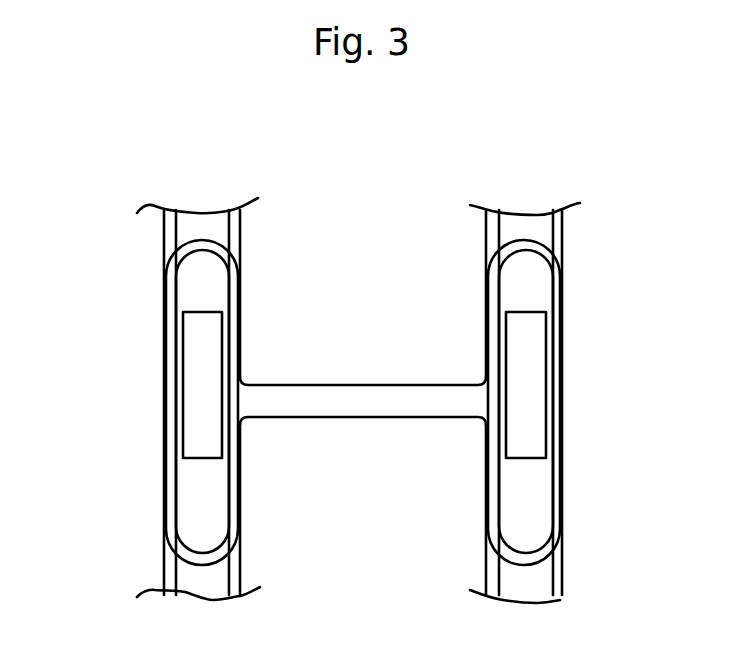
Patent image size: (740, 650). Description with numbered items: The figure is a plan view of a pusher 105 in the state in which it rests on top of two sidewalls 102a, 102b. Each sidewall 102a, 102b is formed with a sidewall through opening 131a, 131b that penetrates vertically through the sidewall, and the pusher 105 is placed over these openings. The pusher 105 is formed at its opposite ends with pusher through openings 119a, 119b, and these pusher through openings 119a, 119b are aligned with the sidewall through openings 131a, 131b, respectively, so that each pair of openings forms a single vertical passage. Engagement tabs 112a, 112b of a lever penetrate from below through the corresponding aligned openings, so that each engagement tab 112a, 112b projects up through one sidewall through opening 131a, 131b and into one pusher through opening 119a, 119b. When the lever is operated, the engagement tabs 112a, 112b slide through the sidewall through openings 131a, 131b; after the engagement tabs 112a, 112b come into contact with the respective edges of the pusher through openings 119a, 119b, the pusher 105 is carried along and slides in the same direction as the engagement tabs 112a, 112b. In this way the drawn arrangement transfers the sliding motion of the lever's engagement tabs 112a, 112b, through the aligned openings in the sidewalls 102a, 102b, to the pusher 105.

The pusher 105 is at (312, 385).
The sidewall 102a is at (166, 575).
The sidewall 102b is at (567, 588).
The sidewall through opening 131a is at (188, 228).
The sidewall through opening 131b is at (535, 230).
The pusher through opening 119a is at (200, 297).
The pusher through opening 119b is at (530, 290).
The engagement tab 112a is at (197, 409).
The engagement tab 112b is at (523, 410).